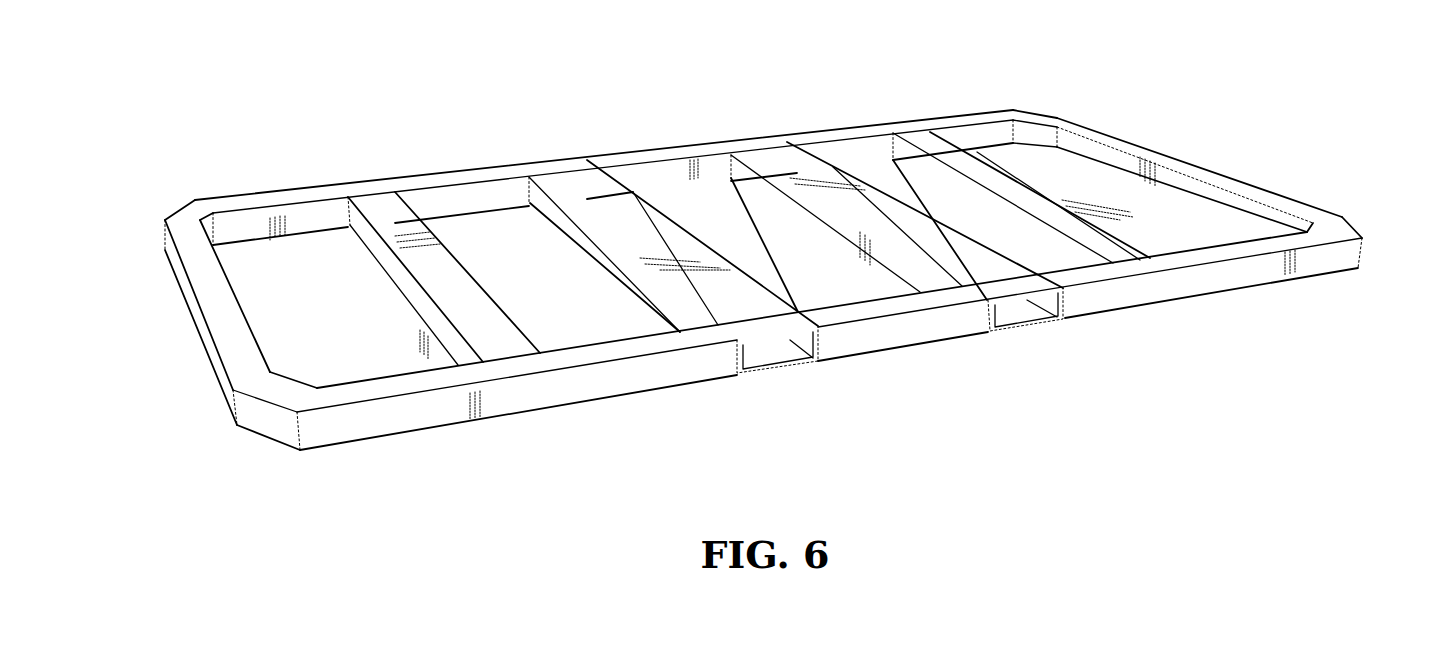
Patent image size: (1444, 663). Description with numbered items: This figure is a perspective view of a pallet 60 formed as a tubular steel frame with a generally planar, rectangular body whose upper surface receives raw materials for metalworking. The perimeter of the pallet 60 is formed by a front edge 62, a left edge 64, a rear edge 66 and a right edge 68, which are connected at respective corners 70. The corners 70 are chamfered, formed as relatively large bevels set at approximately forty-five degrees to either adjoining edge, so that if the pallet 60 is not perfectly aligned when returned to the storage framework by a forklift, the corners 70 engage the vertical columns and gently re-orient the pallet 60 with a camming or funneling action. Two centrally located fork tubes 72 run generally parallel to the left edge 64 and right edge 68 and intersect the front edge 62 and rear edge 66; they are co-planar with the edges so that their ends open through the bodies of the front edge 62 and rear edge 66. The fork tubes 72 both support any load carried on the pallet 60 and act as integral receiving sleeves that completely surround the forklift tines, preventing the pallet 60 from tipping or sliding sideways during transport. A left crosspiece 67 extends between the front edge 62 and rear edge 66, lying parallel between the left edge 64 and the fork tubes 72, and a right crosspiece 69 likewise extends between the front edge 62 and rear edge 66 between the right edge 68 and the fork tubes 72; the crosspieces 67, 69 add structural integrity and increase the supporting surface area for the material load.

The pallet 60 is at (785, 272).
The front edge 62 is at (1195, 278).
The left edge 64 is at (192, 317).
The rear edge 66 is at (482, 168).
The left crosspiece 67 is at (385, 260).
The right edge 68 is at (1267, 185).
The right crosspiece 69 is at (1007, 190).
The corners 70 is at (180, 210).
The fork tubes 72 is at (771, 360).